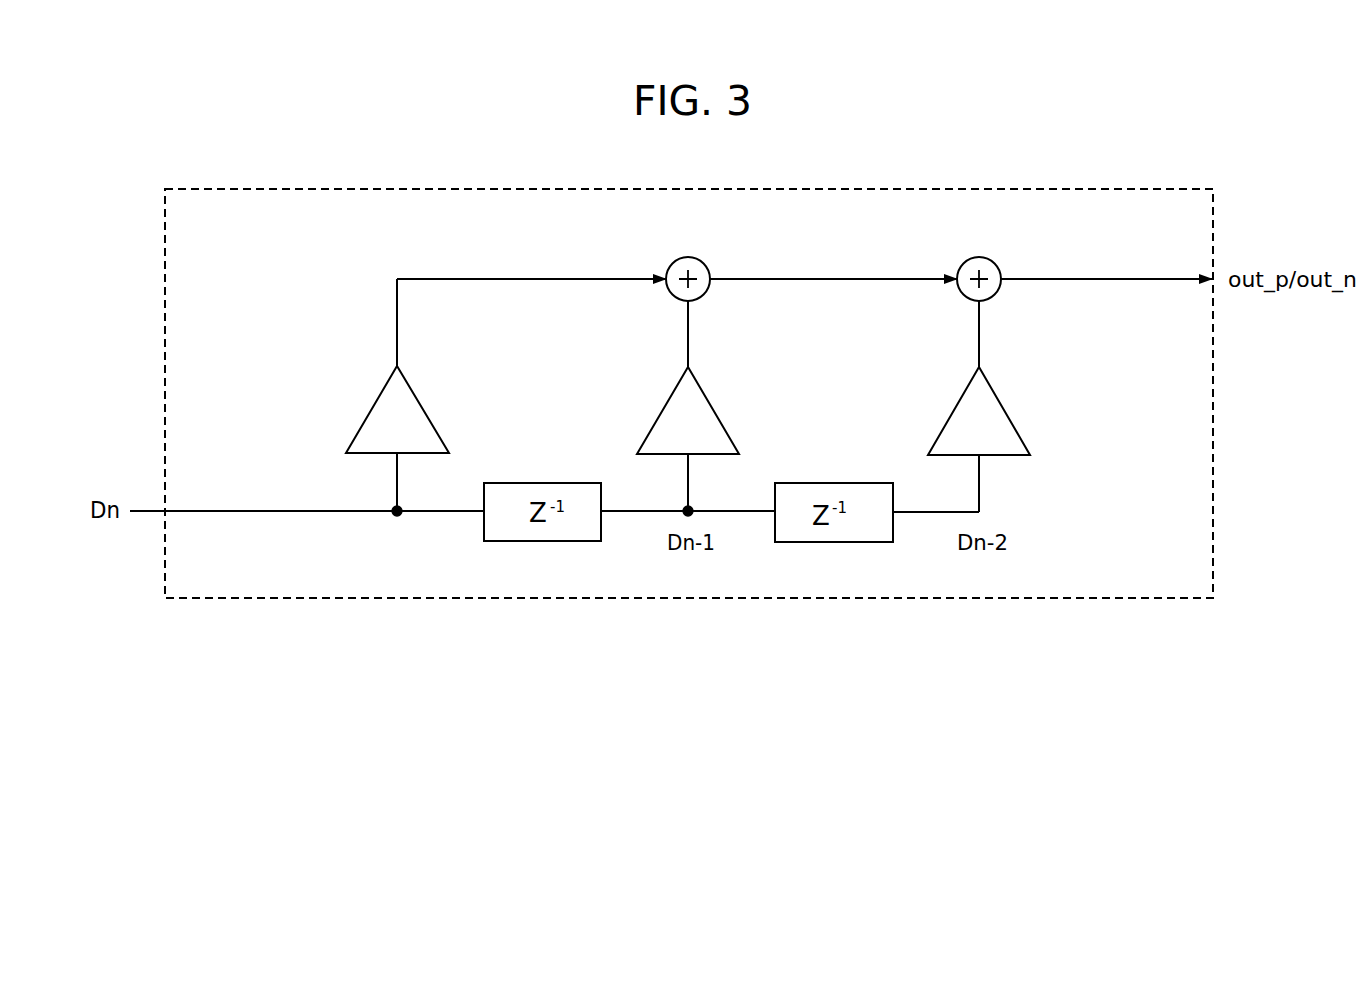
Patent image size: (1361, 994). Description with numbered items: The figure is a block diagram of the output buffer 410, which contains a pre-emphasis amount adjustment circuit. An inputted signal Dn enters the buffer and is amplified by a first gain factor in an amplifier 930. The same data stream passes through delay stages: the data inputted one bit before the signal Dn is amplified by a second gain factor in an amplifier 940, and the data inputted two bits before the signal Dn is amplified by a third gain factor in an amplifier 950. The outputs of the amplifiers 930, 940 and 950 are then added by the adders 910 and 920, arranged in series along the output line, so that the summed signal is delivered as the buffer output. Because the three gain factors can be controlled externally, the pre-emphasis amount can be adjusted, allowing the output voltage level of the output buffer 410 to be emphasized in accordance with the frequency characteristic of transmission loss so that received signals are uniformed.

The output buffer 410 is at (895, 190).
The adder 910 is at (706, 263).
The adder 920 is at (997, 263).
The amplifier 930 is at (373, 408).
The amplifier 940 is at (663, 409).
The amplifier 950 is at (954, 409).